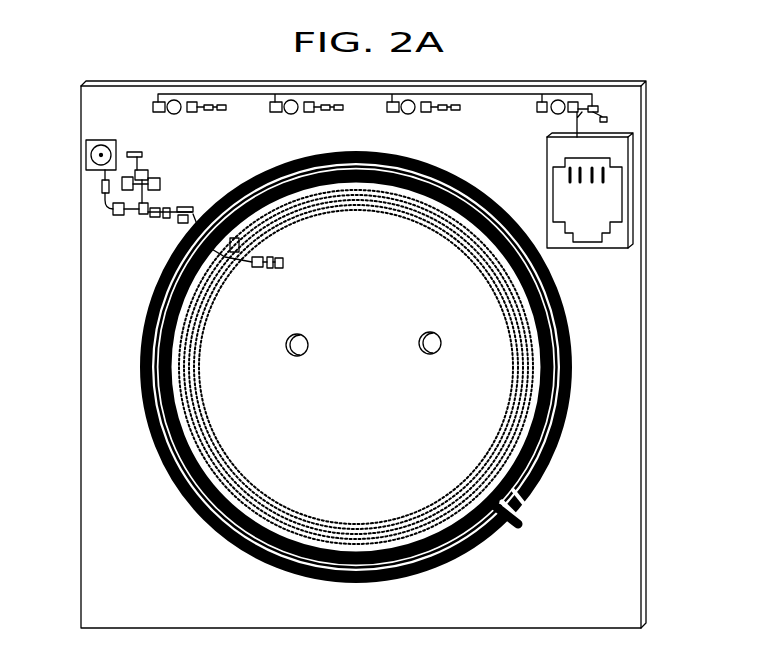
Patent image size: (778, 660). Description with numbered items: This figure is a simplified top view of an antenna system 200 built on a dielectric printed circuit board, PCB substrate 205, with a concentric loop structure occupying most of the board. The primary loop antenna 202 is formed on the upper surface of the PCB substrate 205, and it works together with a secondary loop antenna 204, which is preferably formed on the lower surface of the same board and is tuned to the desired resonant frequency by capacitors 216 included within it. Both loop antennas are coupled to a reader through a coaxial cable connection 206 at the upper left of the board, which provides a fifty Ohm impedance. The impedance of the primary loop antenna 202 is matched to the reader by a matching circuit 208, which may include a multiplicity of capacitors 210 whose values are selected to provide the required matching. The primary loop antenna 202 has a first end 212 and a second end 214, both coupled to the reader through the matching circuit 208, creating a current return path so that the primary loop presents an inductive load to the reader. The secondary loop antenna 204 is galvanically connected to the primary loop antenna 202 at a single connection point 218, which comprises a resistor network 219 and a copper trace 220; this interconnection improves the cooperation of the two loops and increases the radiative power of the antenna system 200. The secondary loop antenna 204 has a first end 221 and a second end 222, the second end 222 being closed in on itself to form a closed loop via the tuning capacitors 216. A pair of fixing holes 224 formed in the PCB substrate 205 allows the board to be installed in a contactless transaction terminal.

The antenna system 200 is at (655, 69).
The primary loop antenna 202 is at (450, 172).
The secondary loop antenna 204 is at (497, 442).
The PCB substrate 205 is at (608, 600).
The coaxial cable connection 206 is at (86, 148).
The matching circuit 208 is at (113, 219).
The capacitors 210 is at (143, 220).
The first end 212 is at (202, 226).
The second end 214 is at (175, 232).
The capacitors 216 is at (283, 262).
The connection point 218 is at (210, 274).
The resistor network 219 is at (236, 240).
The copper trace 220 is at (160, 222).
The first end 221 is at (160, 283).
The second end 222 is at (213, 281).
The fixing holes 224 is at (308, 343).